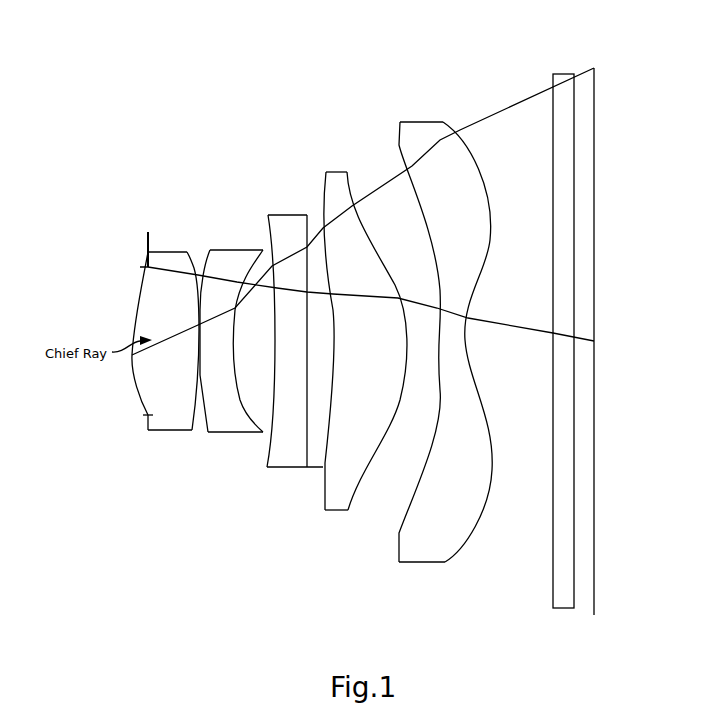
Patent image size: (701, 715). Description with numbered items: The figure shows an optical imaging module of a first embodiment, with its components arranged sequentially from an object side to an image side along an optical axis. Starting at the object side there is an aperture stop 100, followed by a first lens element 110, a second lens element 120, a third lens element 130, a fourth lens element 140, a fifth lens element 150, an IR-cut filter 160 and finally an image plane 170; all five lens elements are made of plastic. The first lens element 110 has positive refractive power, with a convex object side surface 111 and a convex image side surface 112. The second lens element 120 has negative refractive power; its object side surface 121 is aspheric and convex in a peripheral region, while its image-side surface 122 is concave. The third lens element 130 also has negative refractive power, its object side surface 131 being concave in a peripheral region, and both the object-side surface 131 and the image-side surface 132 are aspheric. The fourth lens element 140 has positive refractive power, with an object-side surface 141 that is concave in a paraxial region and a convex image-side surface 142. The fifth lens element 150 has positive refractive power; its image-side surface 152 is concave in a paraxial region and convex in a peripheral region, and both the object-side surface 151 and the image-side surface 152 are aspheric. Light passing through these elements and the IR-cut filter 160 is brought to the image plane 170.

The aperture stop 100 is at (134, 243).
The first lens element 110 is at (133, 334).
The object side surface 111 is at (124, 390).
The image side surface 112 is at (177, 396).
The second lens element 120 is at (212, 357).
The object side surface 121 is at (195, 431).
The image-side surface 122 is at (230, 401).
The third lens element 130 is at (275, 349).
The object side surface 131 is at (259, 457).
The image-side surface 132 is at (294, 430).
The fourth lens element 140 is at (338, 342).
The object-side surface 141 is at (309, 469).
The image-side surface 142 is at (335, 496).
The fifth lens element 150 is at (418, 347).
The object-side surface 151 is at (386, 537).
The image-side surface 152 is at (447, 544).
The IR-cut filter 160 is at (564, 64).
The image plane 170 is at (610, 103).